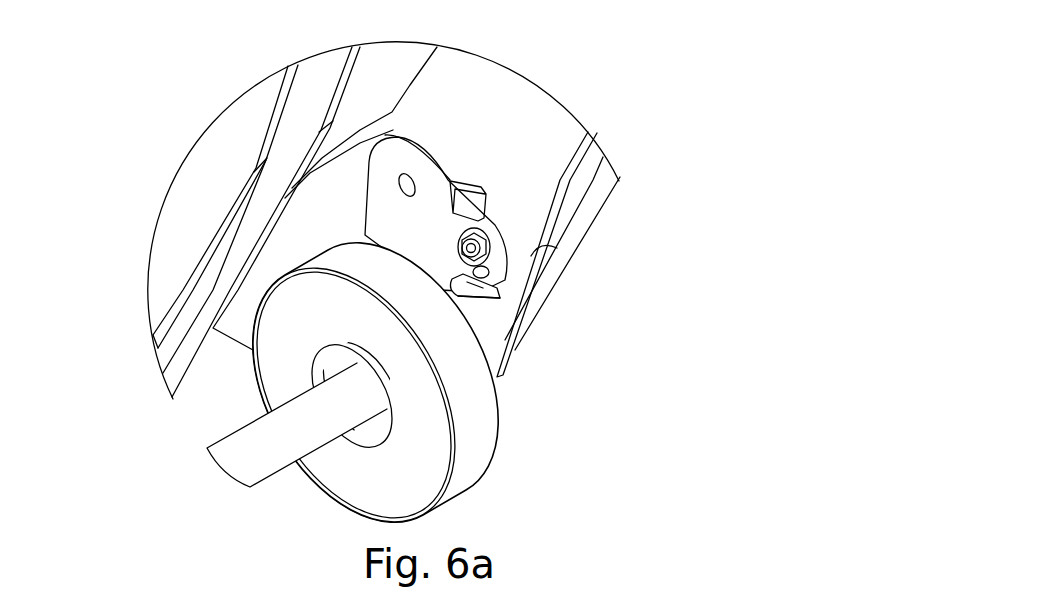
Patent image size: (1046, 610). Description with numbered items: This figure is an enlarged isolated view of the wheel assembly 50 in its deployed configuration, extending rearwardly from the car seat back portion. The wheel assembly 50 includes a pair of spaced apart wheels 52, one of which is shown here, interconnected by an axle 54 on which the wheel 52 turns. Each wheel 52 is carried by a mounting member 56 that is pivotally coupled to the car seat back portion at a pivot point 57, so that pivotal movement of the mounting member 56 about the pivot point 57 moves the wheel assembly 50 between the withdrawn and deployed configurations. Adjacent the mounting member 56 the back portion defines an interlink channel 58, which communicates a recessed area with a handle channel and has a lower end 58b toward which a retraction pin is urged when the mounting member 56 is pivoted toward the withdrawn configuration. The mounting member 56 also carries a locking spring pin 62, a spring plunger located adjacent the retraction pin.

The wheel assembly 50 is at (276, 505).
The wheel 52 is at (417, 465).
The axle 54 is at (248, 450).
The mounting member 56 is at (435, 205).
The pivot point 57 is at (392, 188).
The interlink channel 58 is at (468, 287).
The lower end of interlink channel 58b is at (473, 297).
The locking spring pin 62 is at (480, 243).